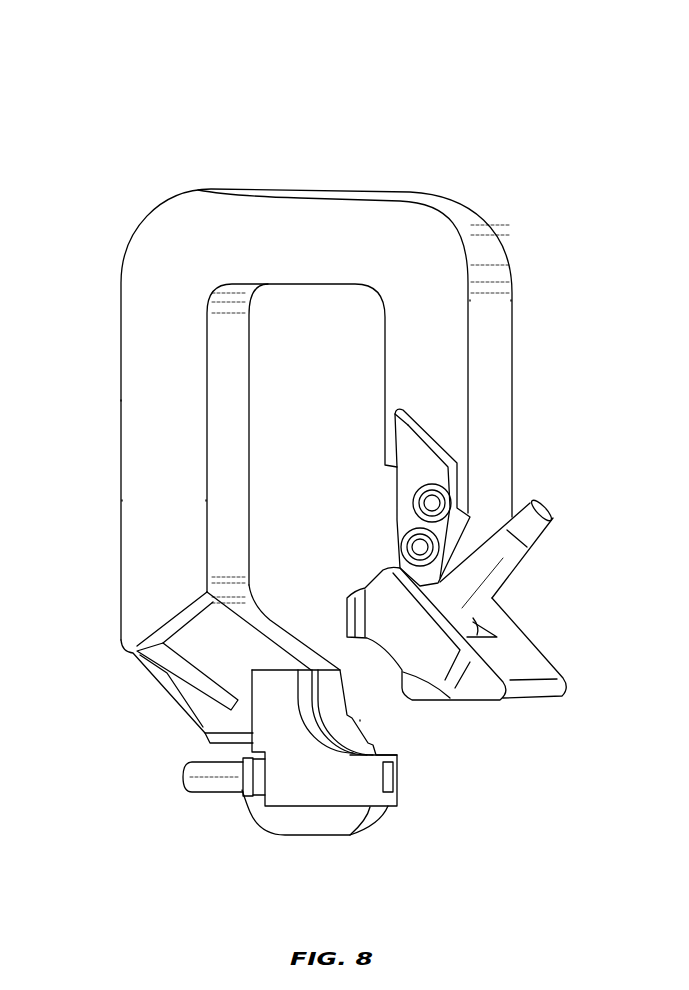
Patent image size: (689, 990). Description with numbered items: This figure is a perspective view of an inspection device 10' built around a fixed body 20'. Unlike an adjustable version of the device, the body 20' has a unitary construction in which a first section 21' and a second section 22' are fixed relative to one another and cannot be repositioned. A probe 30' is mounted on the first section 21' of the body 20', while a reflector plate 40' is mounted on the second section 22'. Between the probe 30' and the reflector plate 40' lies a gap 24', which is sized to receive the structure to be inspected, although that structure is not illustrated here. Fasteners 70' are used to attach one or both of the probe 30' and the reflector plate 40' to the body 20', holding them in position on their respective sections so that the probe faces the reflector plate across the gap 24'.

The inspection device 10' is at (100, 213).
The fixed body 20' is at (319, 466).
The first section 21' is at (526, 340).
The second section 22' is at (120, 553).
The gap 24' is at (434, 759).
The probe 30' is at (456, 627).
The reflector plate 40' is at (290, 765).
The fasteners 70' is at (490, 497).